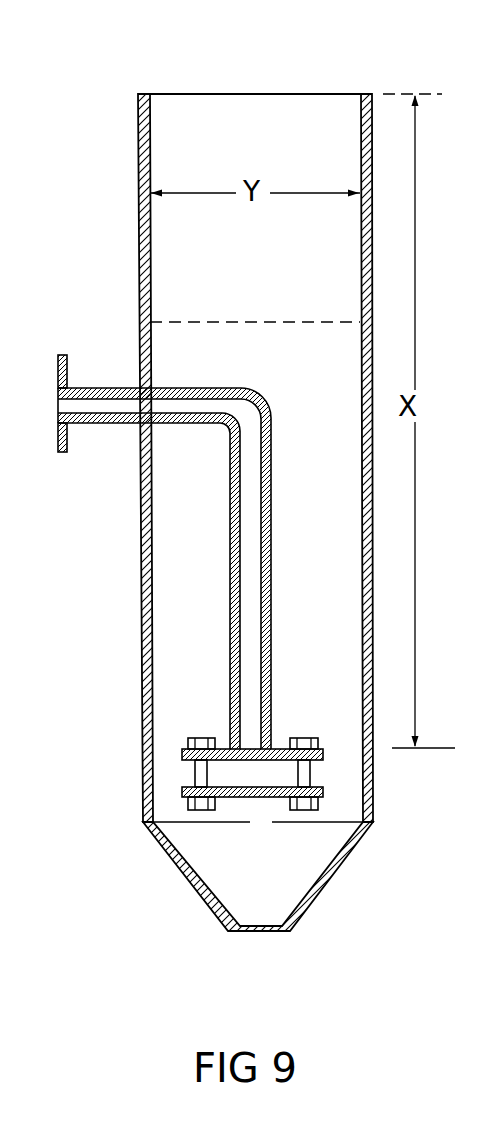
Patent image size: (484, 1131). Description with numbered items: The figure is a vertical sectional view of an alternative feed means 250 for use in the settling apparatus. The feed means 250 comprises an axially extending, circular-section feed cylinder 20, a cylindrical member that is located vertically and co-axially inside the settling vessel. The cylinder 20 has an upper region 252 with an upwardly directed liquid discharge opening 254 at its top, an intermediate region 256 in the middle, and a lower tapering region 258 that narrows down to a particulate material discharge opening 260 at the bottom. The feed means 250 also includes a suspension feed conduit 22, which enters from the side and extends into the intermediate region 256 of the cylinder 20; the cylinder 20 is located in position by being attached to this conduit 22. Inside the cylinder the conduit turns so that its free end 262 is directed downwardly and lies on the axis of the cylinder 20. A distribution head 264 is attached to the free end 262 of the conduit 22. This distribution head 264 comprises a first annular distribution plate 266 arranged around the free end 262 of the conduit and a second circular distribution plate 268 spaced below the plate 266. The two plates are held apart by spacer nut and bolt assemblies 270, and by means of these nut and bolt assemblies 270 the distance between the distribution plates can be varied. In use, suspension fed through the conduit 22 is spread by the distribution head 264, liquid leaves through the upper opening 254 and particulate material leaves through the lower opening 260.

The feed cylinder 20 is at (264, 499).
The suspension feed conduit 22 is at (101, 388).
The feed means 250 is at (311, 458).
The upper region 252 is at (202, 267).
The liquid discharge opening 254 is at (255, 49).
The intermediate region 256 is at (150, 446).
The lower tapering region 258 is at (225, 876).
The particulate material discharge opening 260 is at (262, 942).
The free end 262 is at (272, 625).
The distribution head 264 is at (242, 770).
The first annular distribution plate 266 is at (222, 748).
The second circular distribution plate 268 is at (265, 798).
The spacer nut and bolt assemblies 270 is at (136, 774).